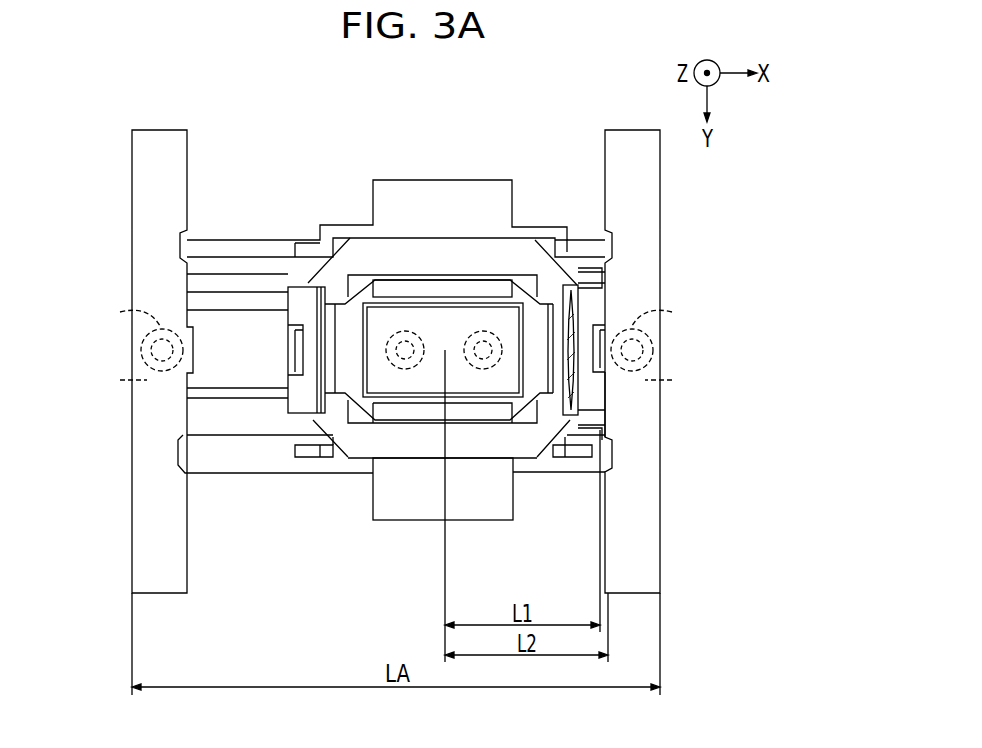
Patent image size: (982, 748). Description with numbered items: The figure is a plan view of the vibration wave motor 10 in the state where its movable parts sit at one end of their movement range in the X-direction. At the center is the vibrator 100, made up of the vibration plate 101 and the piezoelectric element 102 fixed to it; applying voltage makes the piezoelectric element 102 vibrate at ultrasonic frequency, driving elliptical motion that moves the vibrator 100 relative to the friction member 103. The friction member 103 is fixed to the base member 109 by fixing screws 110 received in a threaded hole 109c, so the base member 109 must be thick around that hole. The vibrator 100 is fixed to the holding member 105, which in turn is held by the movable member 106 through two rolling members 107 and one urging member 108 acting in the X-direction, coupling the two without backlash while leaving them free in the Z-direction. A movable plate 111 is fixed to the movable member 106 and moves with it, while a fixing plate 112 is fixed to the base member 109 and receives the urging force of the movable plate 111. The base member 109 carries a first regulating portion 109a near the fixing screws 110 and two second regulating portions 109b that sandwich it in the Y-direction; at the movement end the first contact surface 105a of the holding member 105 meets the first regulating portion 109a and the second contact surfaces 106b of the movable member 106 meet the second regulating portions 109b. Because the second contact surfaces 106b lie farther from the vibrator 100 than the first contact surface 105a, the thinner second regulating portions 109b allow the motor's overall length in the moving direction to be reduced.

The vibration wave motor 10 is at (175, 97).
The vibrator 100 is at (443, 229).
The vibration plate 101 is at (493, 313).
The piezoelectric element 102 is at (455, 320).
The friction member 103 is at (290, 392).
The holding member 105 is at (345, 320).
The first contact surface 105a is at (293, 360).
The movable member 106 is at (333, 437).
The second contact surfaces 106b is at (290, 308).
The rolling members 107 is at (320, 255).
The urging member 108 is at (574, 300).
The base member 109 is at (153, 174).
The first regulating portion 109a is at (600, 376).
The second regulating portions 109b is at (604, 278).
The threaded hole 109c is at (140, 350).
The fixing screws 110 is at (142, 328).
The movable plate 111 is at (528, 240).
The fixing plate 112 is at (247, 425).